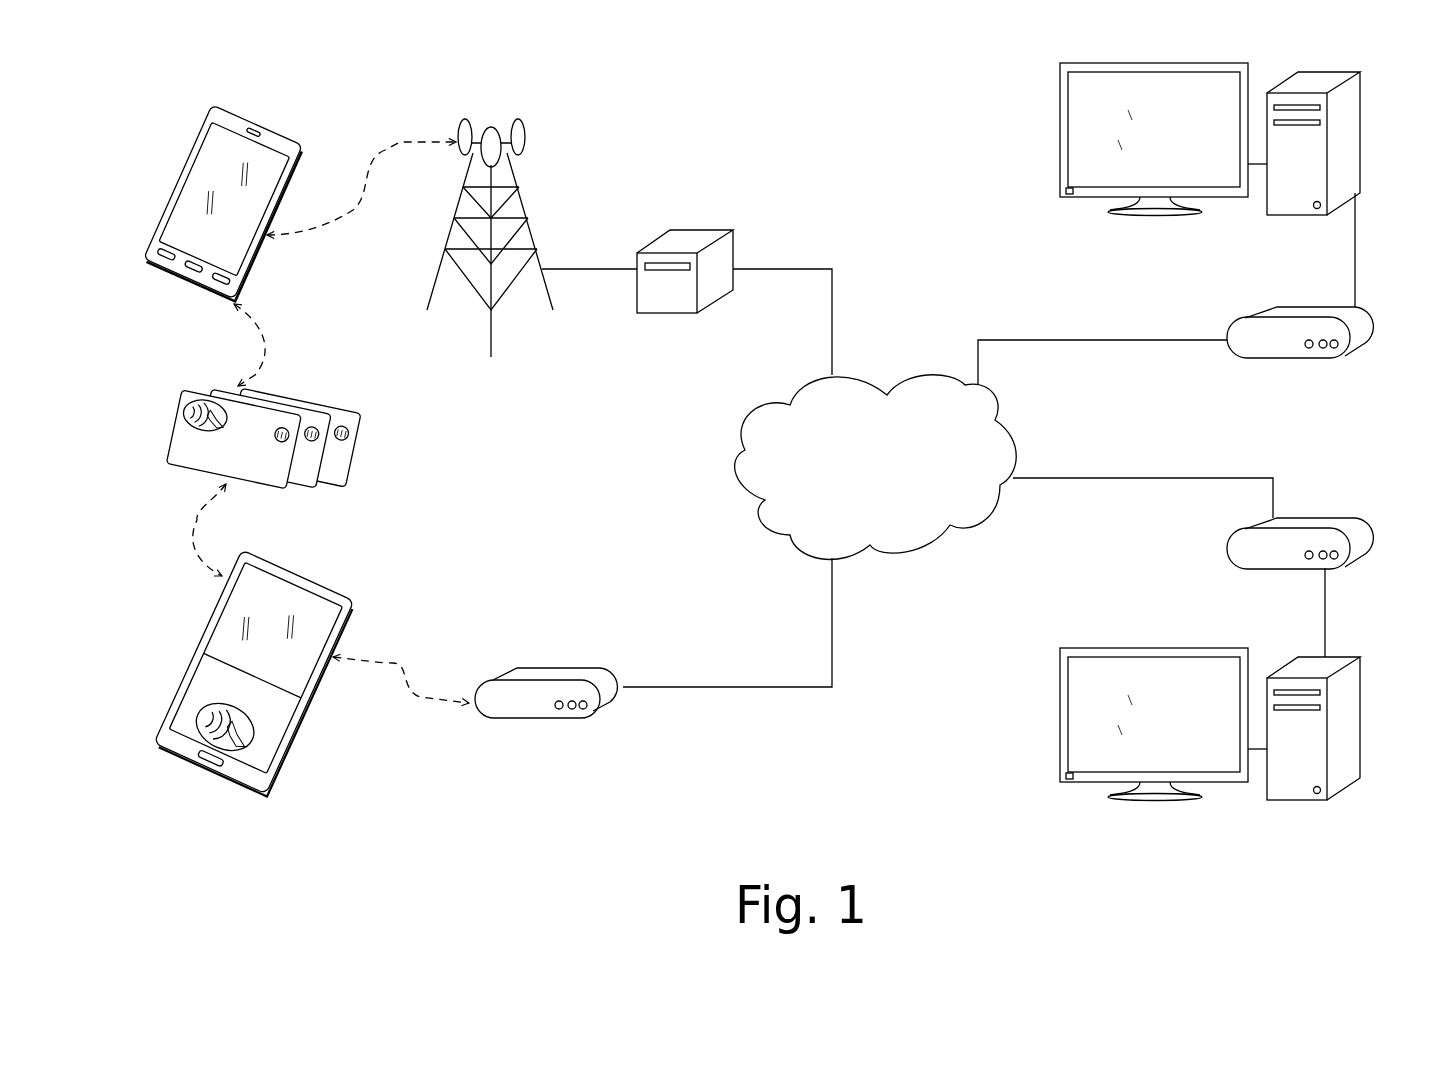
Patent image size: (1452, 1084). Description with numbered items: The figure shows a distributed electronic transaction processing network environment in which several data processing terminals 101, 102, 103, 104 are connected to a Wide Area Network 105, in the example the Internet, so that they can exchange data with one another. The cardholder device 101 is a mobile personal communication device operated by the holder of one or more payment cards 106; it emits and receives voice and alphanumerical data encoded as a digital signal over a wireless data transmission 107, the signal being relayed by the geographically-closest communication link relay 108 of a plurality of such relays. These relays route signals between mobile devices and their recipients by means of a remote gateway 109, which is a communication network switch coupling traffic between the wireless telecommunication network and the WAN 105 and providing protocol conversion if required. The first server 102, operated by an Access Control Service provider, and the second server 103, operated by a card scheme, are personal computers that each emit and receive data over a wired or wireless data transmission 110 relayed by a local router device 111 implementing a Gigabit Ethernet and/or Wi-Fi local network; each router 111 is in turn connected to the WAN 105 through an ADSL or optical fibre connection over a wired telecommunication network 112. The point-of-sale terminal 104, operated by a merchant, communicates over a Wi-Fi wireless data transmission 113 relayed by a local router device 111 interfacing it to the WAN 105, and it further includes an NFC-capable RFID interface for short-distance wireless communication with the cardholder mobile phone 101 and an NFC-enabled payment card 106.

The cardholder device 101 is at (258, 124).
The first server 102 is at (1360, 125).
The second server 103 is at (1360, 713).
The point-of-sale terminal 104 is at (293, 572).
The Wide Area Network 105 is at (987, 520).
The payment card 106 is at (350, 457).
The wireless data transmission 107 is at (397, 142).
The communication link relay 108 is at (521, 203).
The gateway 109 is at (705, 230).
The wired or wireless data transmission 110 is at (1354, 267).
The local router device 111 is at (1247, 358).
The wired telecommunication network 112 is at (1088, 338).
The wireless data transmission 113 is at (403, 667).